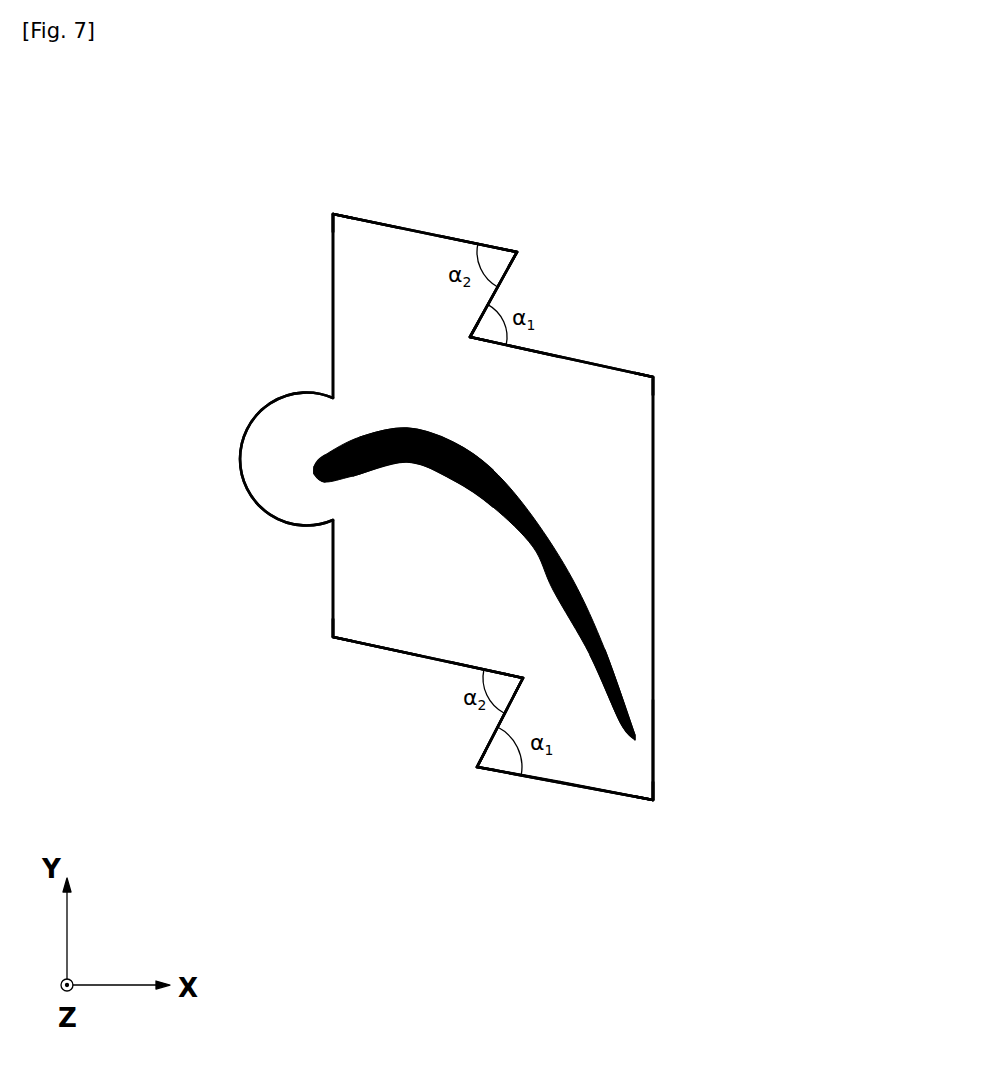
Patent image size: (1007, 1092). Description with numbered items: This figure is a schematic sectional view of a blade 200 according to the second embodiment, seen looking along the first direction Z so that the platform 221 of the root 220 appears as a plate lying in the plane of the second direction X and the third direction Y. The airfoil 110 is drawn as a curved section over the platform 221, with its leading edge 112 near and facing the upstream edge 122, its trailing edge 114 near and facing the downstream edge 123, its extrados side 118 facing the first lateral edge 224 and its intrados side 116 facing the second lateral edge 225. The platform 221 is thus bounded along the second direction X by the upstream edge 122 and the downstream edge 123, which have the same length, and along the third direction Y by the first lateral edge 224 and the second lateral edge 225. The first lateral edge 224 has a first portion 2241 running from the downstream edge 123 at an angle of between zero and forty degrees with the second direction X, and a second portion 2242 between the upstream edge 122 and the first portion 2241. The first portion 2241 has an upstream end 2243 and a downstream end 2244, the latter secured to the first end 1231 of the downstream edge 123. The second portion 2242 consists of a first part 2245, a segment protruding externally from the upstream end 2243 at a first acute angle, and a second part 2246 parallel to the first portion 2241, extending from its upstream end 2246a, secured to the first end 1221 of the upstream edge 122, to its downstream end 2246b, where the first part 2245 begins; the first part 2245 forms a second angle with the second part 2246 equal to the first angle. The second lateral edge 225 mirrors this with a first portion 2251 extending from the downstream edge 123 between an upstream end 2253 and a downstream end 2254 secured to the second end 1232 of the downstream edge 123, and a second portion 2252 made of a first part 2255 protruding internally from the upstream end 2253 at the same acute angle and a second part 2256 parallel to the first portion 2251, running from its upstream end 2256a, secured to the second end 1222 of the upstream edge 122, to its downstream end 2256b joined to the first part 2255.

The airfoil 110 is at (560, 563).
The leading edge 112 is at (315, 477).
The trailing edge 114 is at (637, 737).
The intrados side 116 is at (408, 464).
The extrados side 118 is at (415, 423).
The upstream edge 122 is at (330, 300).
The downstream edge 123 is at (655, 613).
The blade 200 is at (225, 434).
The root 220 is at (676, 452).
The platform 221 is at (617, 765).
The first lateral edge 224 is at (467, 212).
The second lateral edge 225 is at (457, 818).
The first end of the upstream edge 1221 is at (333, 214).
The second end of the upstream edge 1222 is at (330, 635).
The first end of the downstream edge 1231 is at (656, 385).
The second end of the downstream edge 1232 is at (657, 800).
The first portion of the first lateral edge 2241 is at (582, 360).
The second portion of the first lateral edge 2242 is at (373, 227).
The upstream end of the first portion of the first lateral edge 2243 is at (473, 340).
The downstream end of the first portion of the first lateral edge 2244 is at (655, 377).
The first part of the second portion of the first lateral edge 2245 is at (503, 286).
The second part of the second portion of the first lateral edge 2246 is at (413, 230).
The upstream end of the second part of the first lateral edge 2246a is at (337, 214).
The downstream end of the second part of the first lateral edge 2246b is at (518, 253).
The first portion of the second lateral edge 2251 is at (573, 787).
The second portion of the second lateral edge 2252 is at (385, 650).
The upstream end of the first portion of the second lateral edge 2253 is at (478, 772).
The downstream end of the first portion of the second lateral edge 2254 is at (648, 800).
The first part of the second portion of the second lateral edge 2255 is at (521, 698).
The second part of the second portion of the second lateral edge 2256 is at (432, 658).
The upstream end of the second part of the second lateral edge 2256a is at (337, 640).
The downstream end of the second part of the second lateral edge 2256b is at (520, 676).